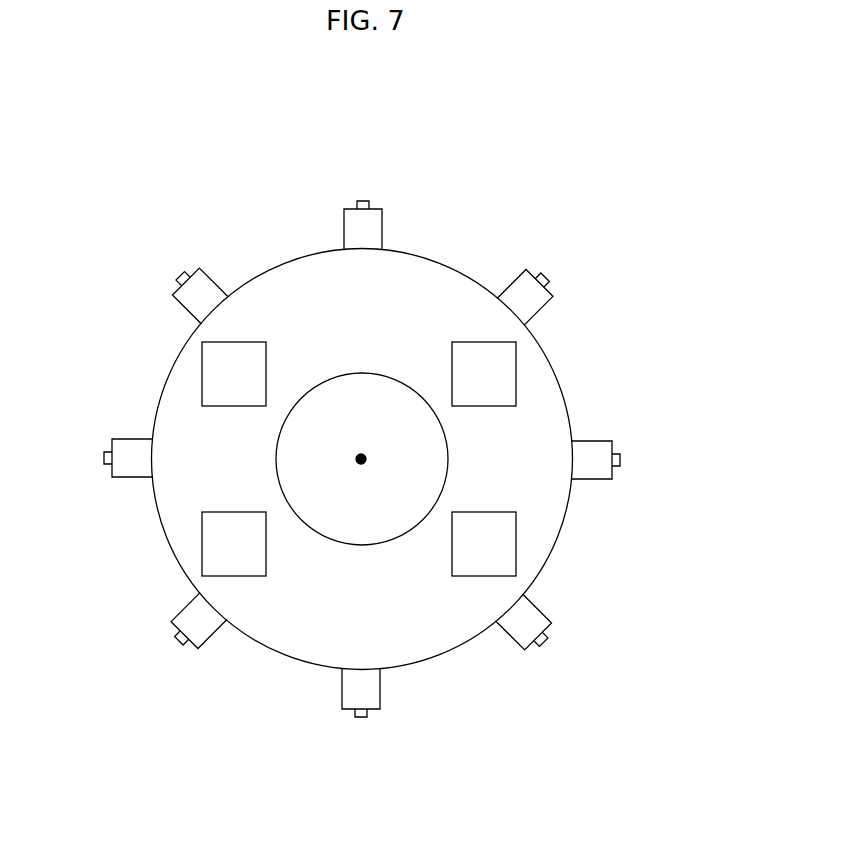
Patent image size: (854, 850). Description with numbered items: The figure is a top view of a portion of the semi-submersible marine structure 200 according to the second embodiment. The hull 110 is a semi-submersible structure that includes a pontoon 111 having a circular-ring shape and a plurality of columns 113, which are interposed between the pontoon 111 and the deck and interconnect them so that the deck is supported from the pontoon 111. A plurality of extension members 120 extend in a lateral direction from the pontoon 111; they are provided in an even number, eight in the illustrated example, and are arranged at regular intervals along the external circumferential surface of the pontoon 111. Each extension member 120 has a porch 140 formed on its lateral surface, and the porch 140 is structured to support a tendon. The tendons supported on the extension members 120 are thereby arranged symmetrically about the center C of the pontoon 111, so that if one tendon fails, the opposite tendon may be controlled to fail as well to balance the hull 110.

The semi-submersible marine structure 200 is at (75, 148).
The hull 110 is at (686, 207).
The pontoon 111 is at (438, 257).
The column 113 is at (516, 371).
The extension member 120 is at (590, 480).
The porch 140 is at (620, 460).
The center of the pontoon C is at (361, 459).